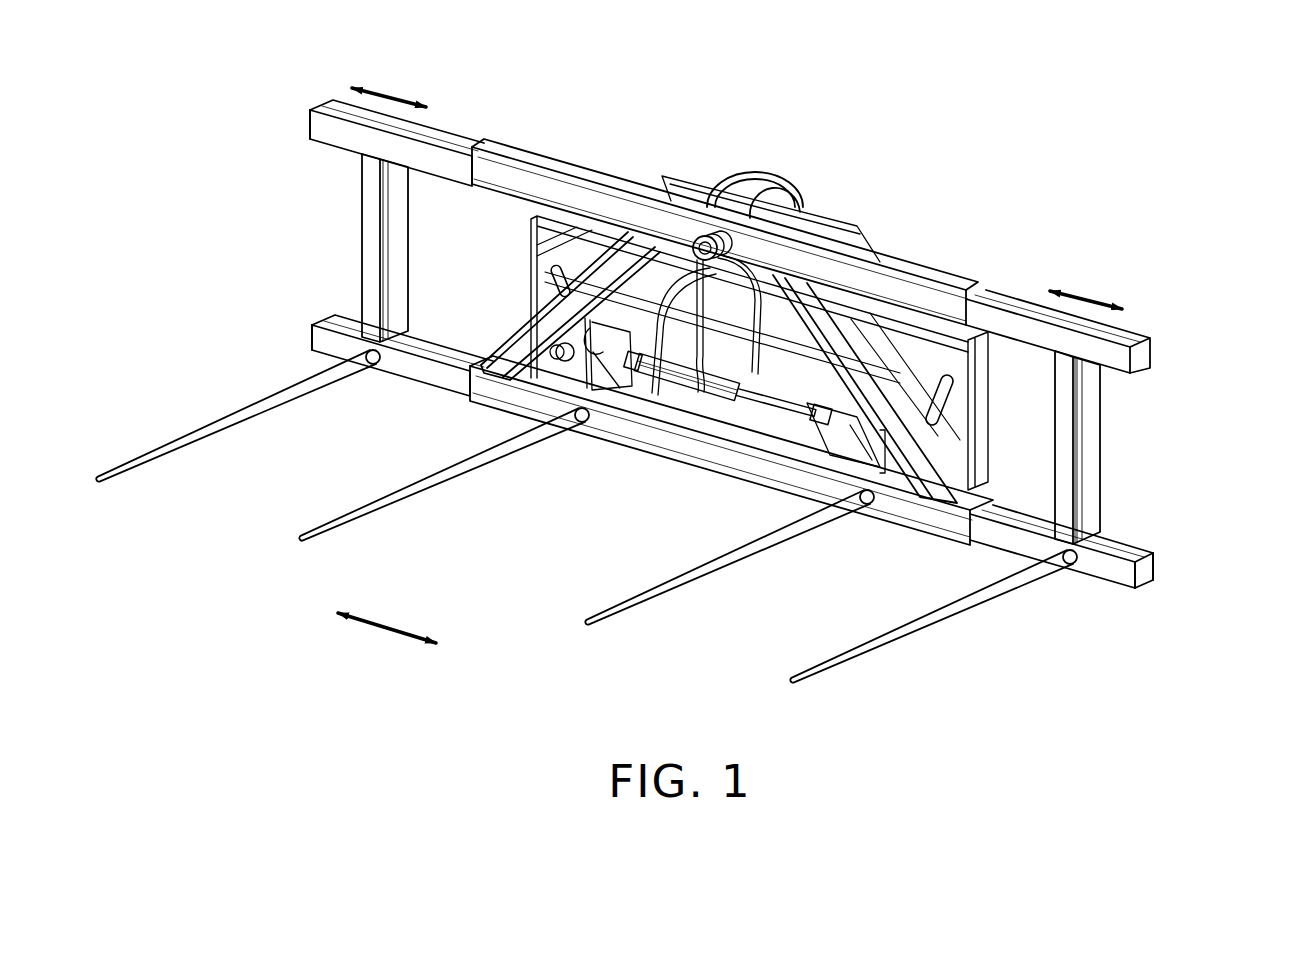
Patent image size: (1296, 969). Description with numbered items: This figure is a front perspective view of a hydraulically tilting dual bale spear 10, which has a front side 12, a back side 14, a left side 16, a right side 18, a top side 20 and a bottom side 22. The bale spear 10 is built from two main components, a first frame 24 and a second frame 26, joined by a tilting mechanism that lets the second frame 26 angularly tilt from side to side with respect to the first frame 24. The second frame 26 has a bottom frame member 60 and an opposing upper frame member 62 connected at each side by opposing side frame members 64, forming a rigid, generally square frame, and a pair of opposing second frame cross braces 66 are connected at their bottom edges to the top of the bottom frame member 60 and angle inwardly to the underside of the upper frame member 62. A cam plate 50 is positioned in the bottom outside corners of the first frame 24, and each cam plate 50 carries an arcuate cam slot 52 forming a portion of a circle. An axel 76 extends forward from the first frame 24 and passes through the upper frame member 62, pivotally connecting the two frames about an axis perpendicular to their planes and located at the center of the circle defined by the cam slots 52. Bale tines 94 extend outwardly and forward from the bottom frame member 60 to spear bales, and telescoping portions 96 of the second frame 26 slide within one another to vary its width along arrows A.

The hydraulically tilting dual bale spear 10 is at (1190, 297).
The front side 12 is at (206, 657).
The back side 14 is at (957, 144).
The left side 16 is at (1214, 521).
The right side 18 is at (222, 157).
The top side 20 is at (589, 88).
The bottom side 22 is at (500, 623).
The first frame 24 is at (814, 200).
The second frame 26 is at (1102, 591).
The cam plate 50 is at (957, 432).
The cam slot 52 is at (982, 411).
The bottom frame member 60 is at (700, 472).
The upper frame member 62 is at (927, 276).
The side frame members 64 is at (360, 240).
The second frame cross braces 66 is at (520, 347).
The axel 76 is at (707, 240).
The bale tines 94 is at (172, 460).
The telescoping portions 96 is at (458, 142).